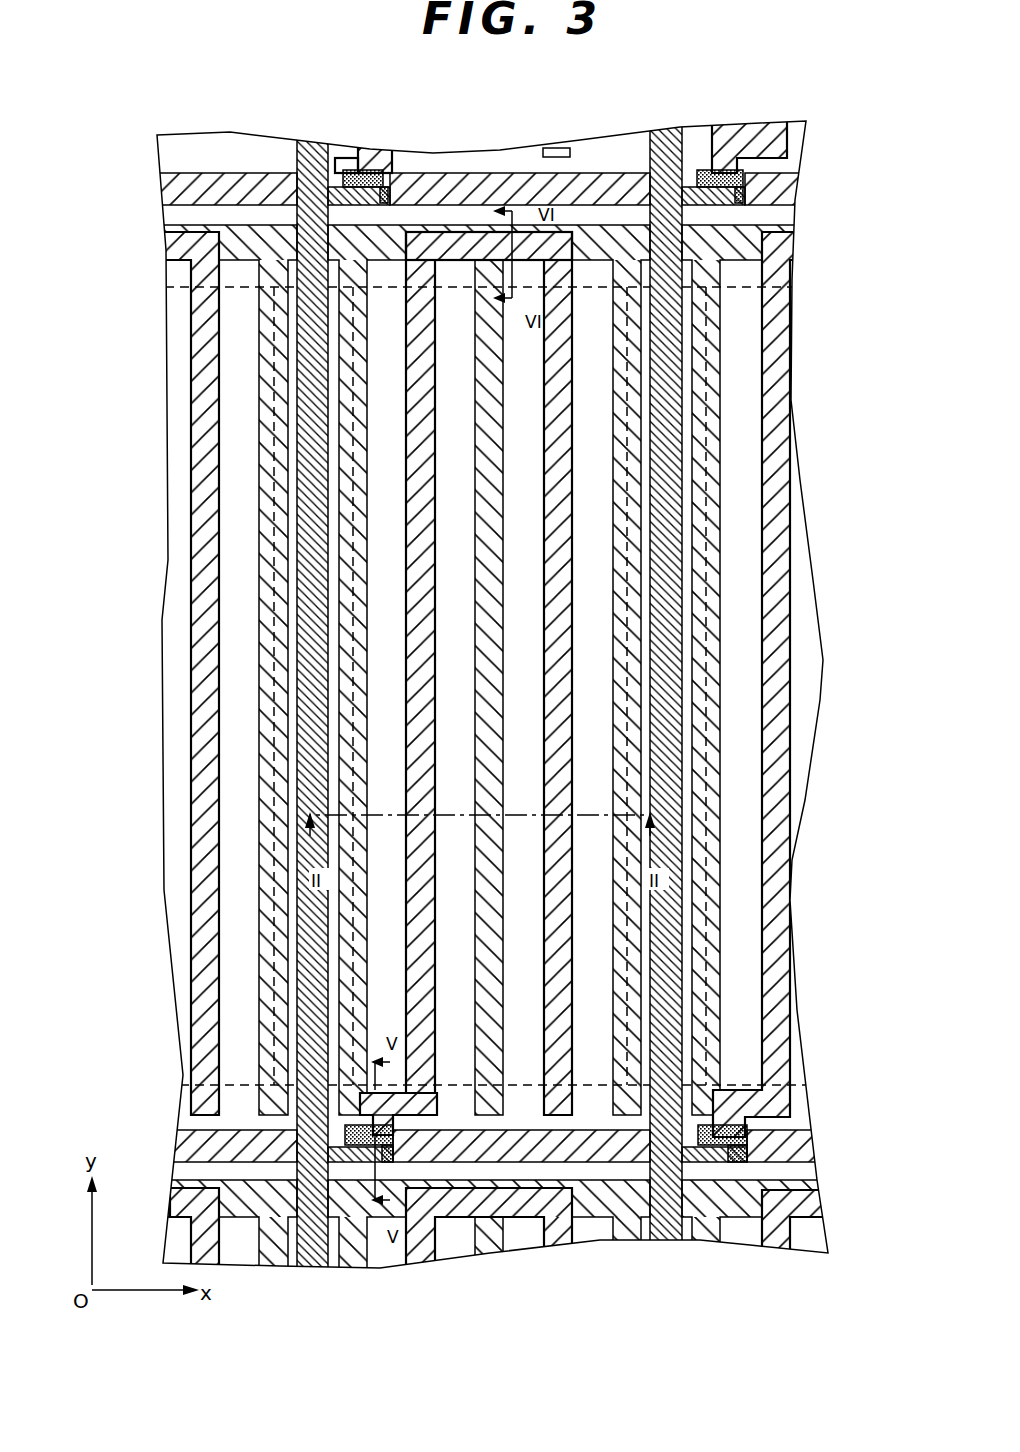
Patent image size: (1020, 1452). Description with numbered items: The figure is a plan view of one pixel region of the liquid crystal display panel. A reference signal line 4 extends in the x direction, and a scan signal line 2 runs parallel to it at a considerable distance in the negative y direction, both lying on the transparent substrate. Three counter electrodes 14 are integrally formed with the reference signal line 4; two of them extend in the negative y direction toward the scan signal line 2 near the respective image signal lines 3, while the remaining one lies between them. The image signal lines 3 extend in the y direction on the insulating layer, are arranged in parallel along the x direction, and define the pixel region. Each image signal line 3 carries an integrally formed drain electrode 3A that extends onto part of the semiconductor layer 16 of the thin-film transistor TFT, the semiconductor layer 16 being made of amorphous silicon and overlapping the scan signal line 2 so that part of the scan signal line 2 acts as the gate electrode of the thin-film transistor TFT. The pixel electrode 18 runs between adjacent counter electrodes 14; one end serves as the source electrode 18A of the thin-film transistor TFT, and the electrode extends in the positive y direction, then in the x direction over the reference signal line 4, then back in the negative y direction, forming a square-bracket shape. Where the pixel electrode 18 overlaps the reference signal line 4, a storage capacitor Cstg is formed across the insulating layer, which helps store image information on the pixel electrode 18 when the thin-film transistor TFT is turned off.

The scan signal line 2 is at (810, 1140).
The image signal line 3 is at (310, 748).
The drain electrode 3A is at (350, 1162).
The reference signal line 4 is at (740, 228).
The counter electrode 14 is at (265, 1023).
The semiconductor layer 16 is at (372, 1130).
The pixel electrode 18 is at (412, 906).
The source electrode 18A is at (367, 1108).
The storage capacitor Cstg is at (448, 214).
The thin-film transistor TFT is at (407, 1146).